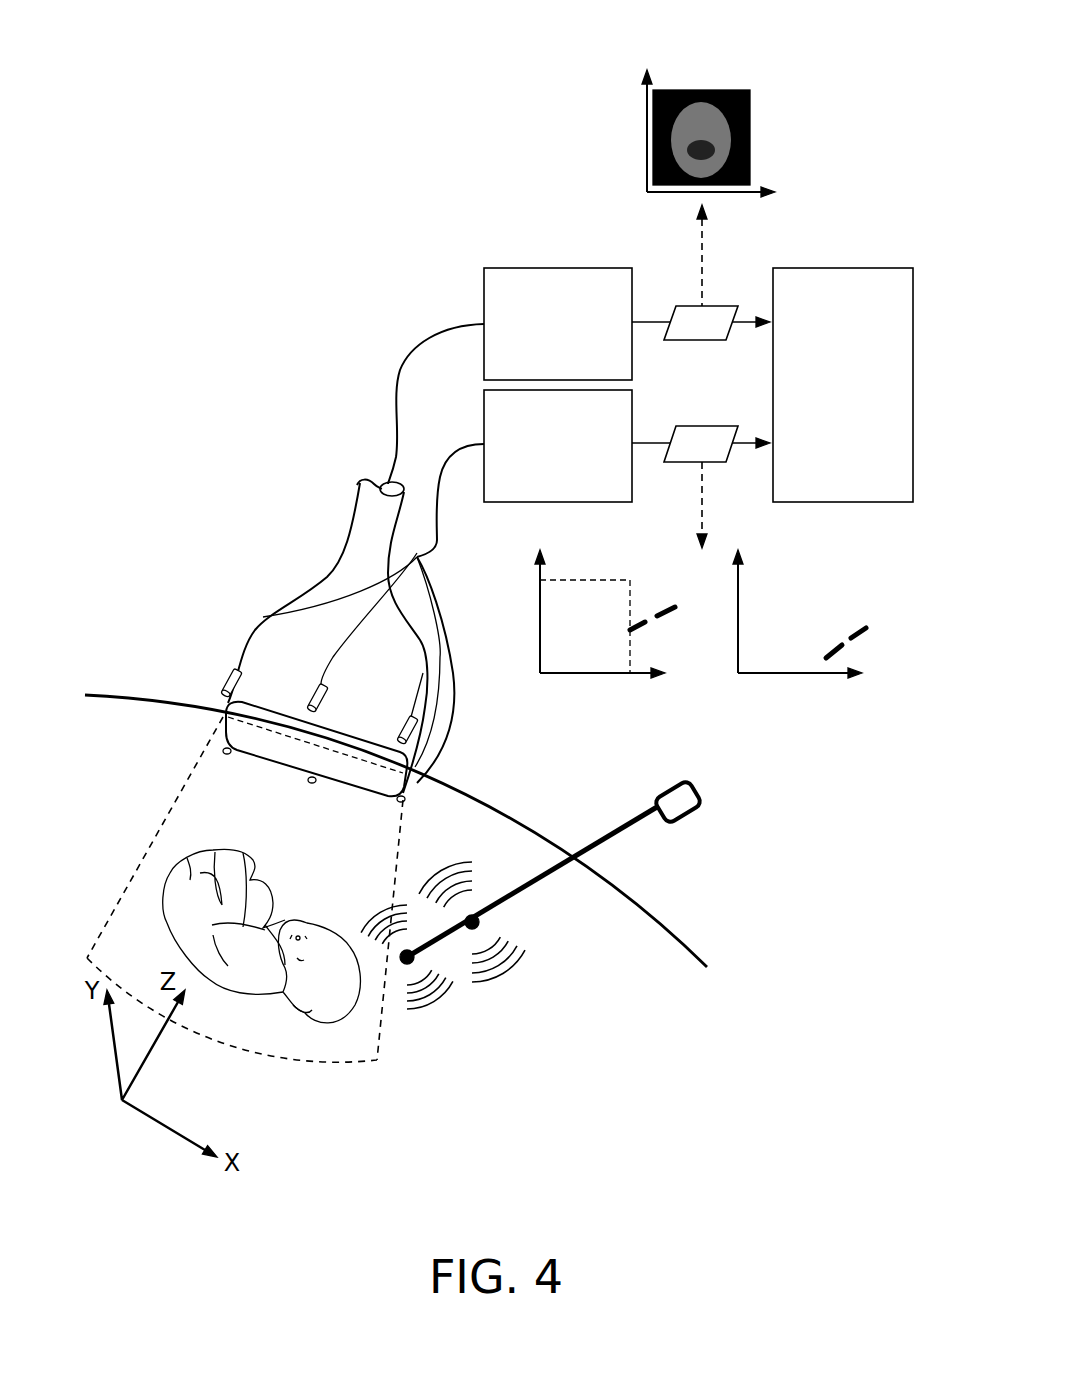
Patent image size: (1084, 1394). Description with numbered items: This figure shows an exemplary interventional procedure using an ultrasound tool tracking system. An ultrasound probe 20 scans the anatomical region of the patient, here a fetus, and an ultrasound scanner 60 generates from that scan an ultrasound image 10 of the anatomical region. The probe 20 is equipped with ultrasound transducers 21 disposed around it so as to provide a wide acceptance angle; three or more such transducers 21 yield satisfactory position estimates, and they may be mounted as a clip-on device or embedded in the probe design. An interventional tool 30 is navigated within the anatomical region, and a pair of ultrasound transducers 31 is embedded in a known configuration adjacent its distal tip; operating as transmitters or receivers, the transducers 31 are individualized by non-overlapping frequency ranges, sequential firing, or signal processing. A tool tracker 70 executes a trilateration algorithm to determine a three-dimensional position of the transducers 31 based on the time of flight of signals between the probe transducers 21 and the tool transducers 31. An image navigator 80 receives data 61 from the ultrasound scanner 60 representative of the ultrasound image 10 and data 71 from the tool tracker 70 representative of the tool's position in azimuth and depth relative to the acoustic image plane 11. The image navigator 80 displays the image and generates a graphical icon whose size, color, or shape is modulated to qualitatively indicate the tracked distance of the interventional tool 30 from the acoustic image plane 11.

The ultrasound image 10 is at (759, 69).
The acoustic image plane 11 is at (622, 562).
The ultrasound probe 20 is at (290, 595).
The ultrasound transducers 21 is at (226, 678).
The interventional tool 30 is at (559, 902).
The ultrasound transducers 31 is at (414, 965).
The ultrasound scanner 60 is at (514, 268).
The data 61 is at (685, 305).
The tool tracker 70 is at (502, 503).
The data 71 is at (690, 425).
The image navigator 80 is at (872, 268).